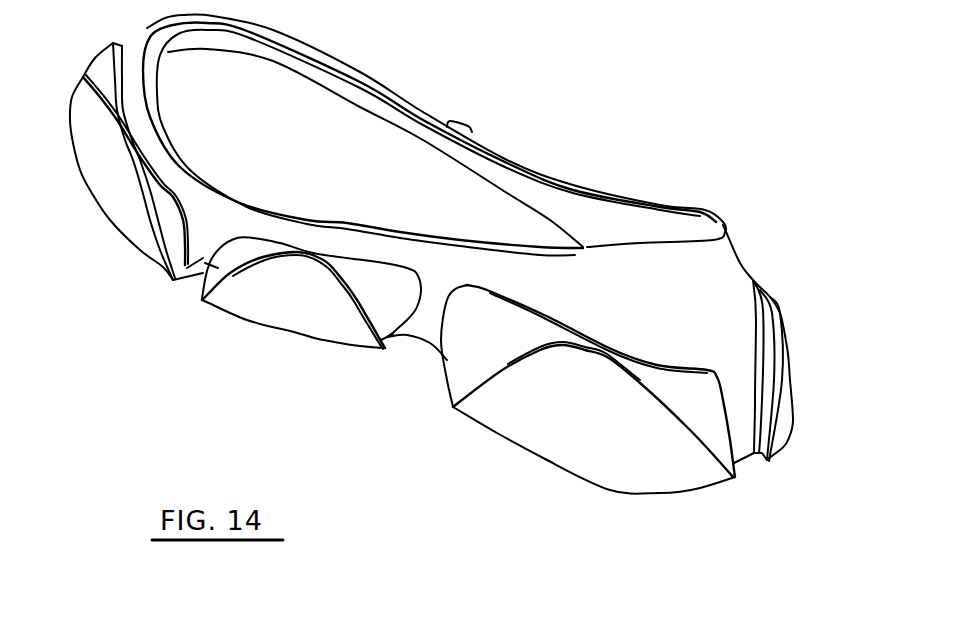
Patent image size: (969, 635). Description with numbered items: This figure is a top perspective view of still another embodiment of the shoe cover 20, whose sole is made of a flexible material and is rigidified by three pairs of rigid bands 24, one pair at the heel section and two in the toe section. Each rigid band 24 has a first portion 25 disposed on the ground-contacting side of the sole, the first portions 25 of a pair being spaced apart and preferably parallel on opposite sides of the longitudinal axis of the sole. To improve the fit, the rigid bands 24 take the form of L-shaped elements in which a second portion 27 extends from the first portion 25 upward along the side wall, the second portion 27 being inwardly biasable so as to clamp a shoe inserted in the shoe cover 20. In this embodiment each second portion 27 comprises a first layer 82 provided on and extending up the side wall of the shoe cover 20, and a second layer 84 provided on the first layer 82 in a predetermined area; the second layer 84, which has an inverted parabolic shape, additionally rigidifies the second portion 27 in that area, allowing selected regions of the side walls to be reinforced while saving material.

The shoe cover 20 is at (578, 120).
The rigid band 24 is at (340, 352).
The first portion 25 is at (390, 338).
The second portion 27 is at (296, 296).
The first layer 82 is at (197, 277).
The second layer 84 is at (240, 287).